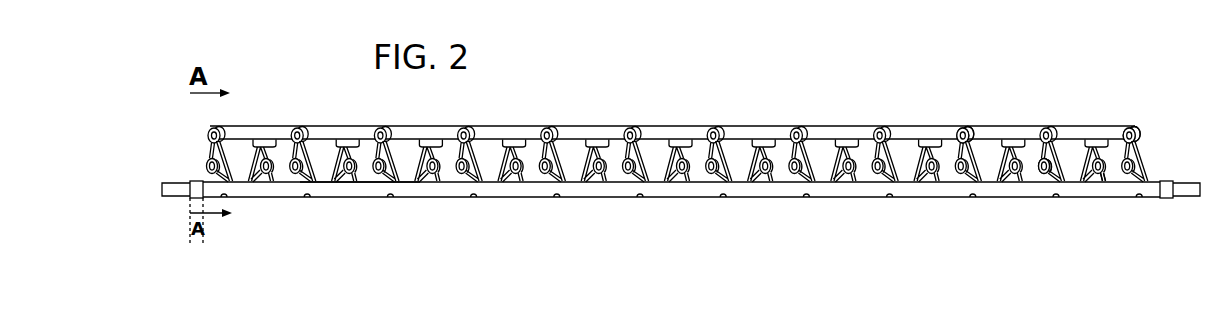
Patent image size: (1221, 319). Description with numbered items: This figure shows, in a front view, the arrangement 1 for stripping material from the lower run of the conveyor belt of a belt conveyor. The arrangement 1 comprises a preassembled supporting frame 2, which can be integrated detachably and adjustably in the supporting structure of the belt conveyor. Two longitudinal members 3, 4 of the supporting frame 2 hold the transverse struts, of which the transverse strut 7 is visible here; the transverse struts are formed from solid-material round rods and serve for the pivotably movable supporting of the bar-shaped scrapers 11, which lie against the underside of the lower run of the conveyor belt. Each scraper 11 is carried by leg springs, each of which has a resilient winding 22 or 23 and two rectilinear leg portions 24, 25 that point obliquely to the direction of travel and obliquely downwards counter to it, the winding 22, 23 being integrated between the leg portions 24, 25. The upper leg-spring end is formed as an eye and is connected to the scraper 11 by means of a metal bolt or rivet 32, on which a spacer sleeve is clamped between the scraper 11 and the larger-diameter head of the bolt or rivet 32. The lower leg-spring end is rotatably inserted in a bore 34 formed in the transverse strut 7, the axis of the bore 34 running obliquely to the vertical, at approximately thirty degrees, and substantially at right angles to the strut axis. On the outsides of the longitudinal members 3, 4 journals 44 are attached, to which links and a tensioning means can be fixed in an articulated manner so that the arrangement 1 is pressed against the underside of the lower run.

The arrangement for stripping material 1 is at (742, 114).
The supporting frame 2 is at (608, 192).
The longitudinal member 3 is at (1167, 196).
The longitudinal member 4 is at (192, 181).
The transverse strut 7 is at (357, 192).
The scraper 11 is at (1097, 125).
The resilient winding 22 is at (1105, 184).
The resilient winding 23 is at (1037, 172).
The leg portion 24 is at (1138, 170).
The leg portion 25 is at (1134, 148).
The metal bolt or rivet 32 is at (960, 124).
The bore 34 is at (891, 198).
The journal 44 is at (170, 194).